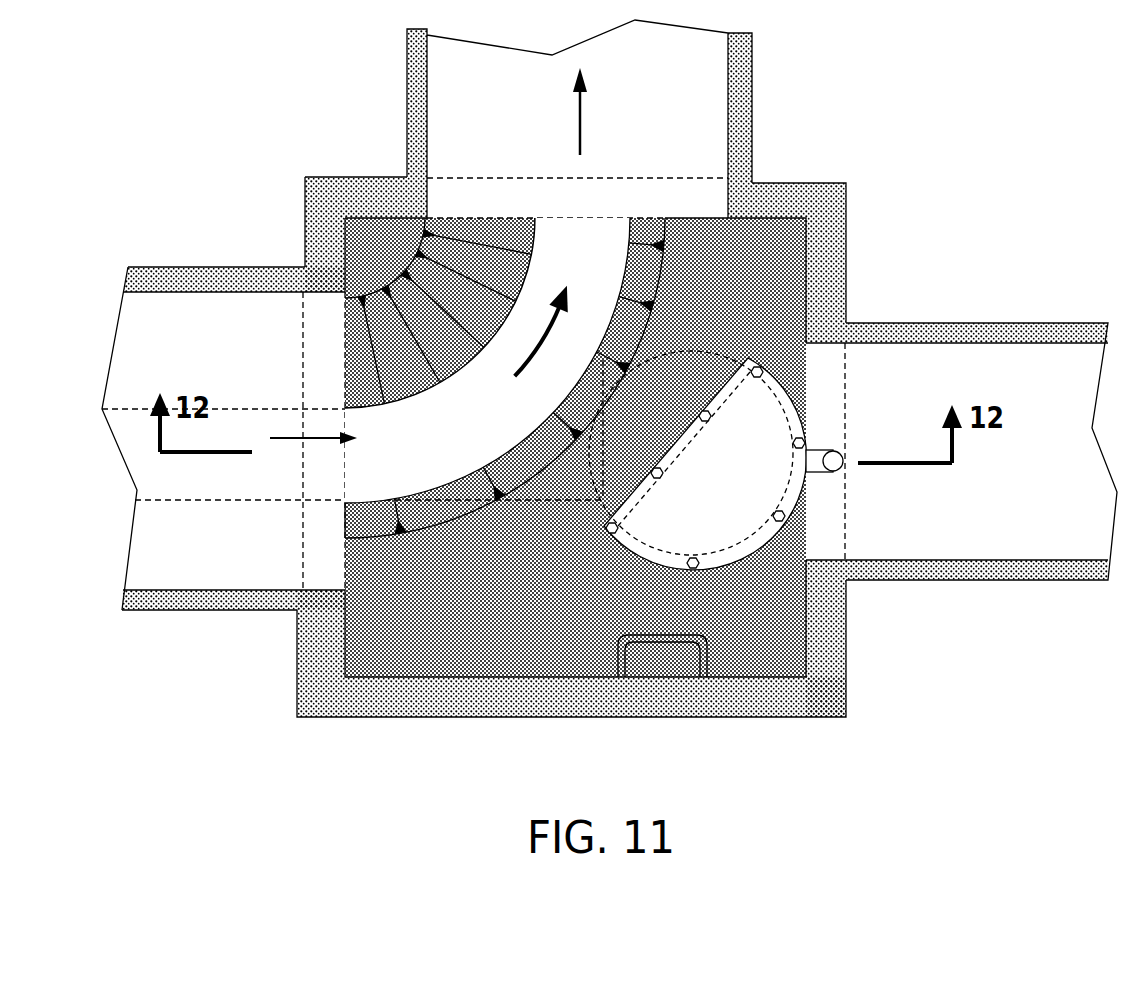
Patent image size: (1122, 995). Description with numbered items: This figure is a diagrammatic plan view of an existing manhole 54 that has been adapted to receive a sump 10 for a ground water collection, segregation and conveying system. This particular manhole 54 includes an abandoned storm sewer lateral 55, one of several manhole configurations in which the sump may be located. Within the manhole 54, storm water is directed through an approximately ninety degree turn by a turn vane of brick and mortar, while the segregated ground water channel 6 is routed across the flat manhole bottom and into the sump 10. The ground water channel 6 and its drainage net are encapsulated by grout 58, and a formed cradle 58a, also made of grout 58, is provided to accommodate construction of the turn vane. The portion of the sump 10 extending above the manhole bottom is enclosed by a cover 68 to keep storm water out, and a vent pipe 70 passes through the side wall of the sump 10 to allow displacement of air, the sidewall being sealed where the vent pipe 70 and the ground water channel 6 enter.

The ground water channel 6 is at (515, 412).
The sump 10 is at (667, 360).
The existing manhole 54 is at (730, 700).
The abandoned storm sewer lateral 55 is at (953, 333).
The grout 58 is at (370, 252).
The formed cradle 58a is at (427, 510).
The cover 68 is at (705, 492).
The vent pipe 70 is at (835, 457).